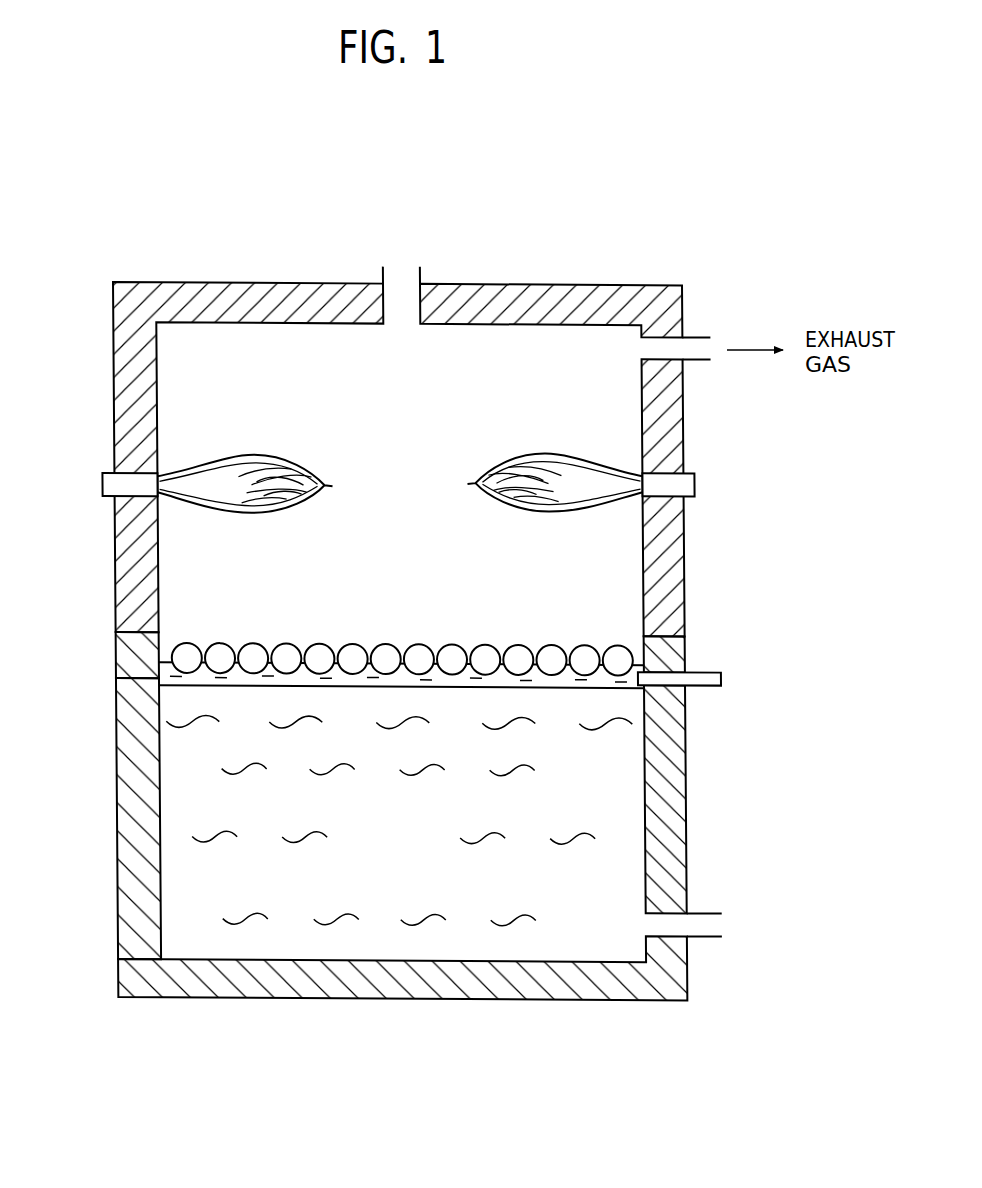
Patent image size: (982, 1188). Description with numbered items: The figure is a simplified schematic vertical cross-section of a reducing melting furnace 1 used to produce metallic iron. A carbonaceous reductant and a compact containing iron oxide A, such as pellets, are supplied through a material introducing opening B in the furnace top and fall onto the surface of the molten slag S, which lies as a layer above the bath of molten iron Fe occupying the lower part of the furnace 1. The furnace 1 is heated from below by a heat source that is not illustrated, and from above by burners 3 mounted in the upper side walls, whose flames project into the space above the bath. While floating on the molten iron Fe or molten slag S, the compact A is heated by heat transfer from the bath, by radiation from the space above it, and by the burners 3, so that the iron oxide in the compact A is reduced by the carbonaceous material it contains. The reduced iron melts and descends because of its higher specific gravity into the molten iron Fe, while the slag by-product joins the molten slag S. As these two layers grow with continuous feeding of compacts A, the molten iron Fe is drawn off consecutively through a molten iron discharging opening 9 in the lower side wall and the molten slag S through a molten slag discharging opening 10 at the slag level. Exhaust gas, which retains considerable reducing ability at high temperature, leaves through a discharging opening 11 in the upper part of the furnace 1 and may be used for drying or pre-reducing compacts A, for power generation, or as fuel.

The reducing melting furnace 1 is at (141, 378).
The burners 3 is at (114, 491).
The molten iron discharging opening 9 is at (698, 914).
The molten slag discharging opening 10 is at (698, 672).
The exhaust gas discharging opening 11 is at (692, 336).
The compact containing an iron oxide A is at (518, 658).
The material introducing opening B is at (420, 272).
The molten slag S is at (158, 679).
The molten iron Fe is at (730, 924).